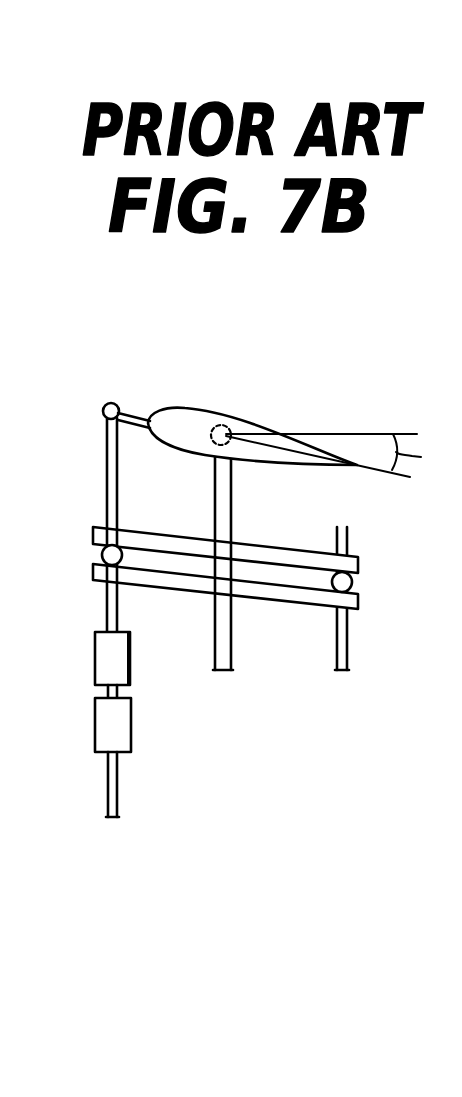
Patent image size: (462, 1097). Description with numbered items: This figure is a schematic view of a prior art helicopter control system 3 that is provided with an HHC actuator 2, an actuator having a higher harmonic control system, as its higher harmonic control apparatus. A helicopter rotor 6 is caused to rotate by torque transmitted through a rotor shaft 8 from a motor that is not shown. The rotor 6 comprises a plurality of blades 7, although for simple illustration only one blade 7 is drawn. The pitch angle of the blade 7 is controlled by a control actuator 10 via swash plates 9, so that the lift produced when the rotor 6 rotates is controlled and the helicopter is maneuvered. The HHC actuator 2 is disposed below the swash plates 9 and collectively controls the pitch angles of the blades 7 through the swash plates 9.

The HHC actuator 2 is at (107, 653).
The control system 3 is at (186, 536).
The rotor 6 is at (283, 401).
The blade 7 is at (184, 418).
The rotor shaft 8 is at (224, 503).
The swash plates 9 is at (298, 557).
The control actuator 10 is at (122, 733).